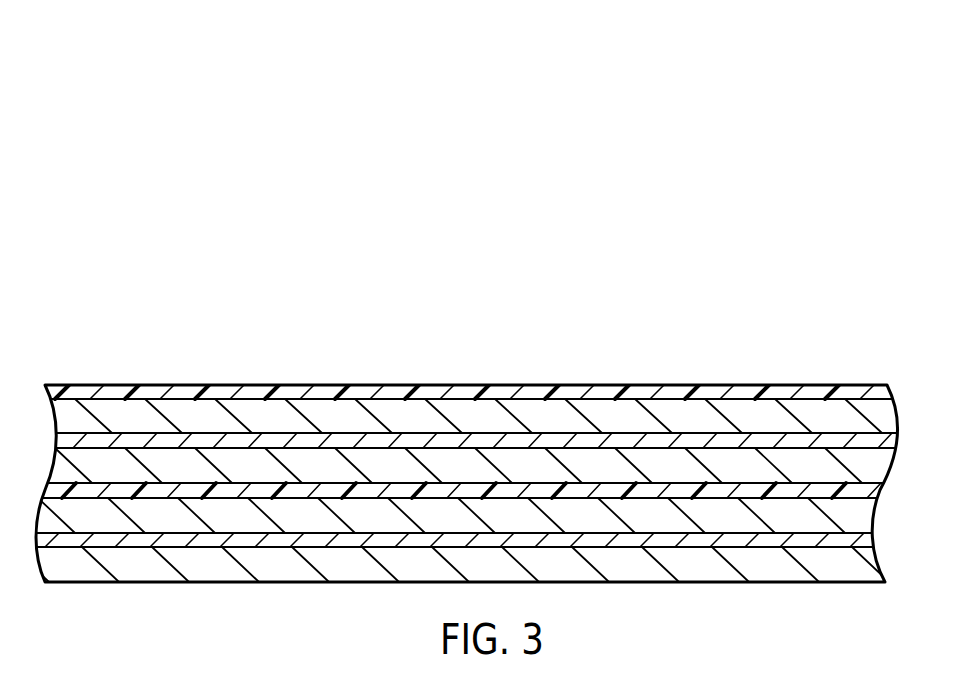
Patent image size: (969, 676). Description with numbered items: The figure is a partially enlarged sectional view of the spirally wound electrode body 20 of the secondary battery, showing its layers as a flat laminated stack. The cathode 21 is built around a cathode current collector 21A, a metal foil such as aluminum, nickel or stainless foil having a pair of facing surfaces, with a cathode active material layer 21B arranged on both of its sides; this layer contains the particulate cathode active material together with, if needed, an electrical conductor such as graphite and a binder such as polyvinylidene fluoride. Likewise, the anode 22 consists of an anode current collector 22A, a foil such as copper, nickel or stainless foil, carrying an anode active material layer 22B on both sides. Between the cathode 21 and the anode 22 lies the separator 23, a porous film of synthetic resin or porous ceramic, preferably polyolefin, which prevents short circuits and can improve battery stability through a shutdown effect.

The spirally wound electrode body 20 is at (814, 152).
The cathode 21 is at (466, 353).
The cathode current collector 21A is at (327, 283).
The cathode active material layer 21B is at (320, 410).
The anode 22 is at (457, 402).
The anode current collector 22A is at (710, 283).
The anode active material layer 22B is at (708, 510).
The separator 23 is at (863, 388).